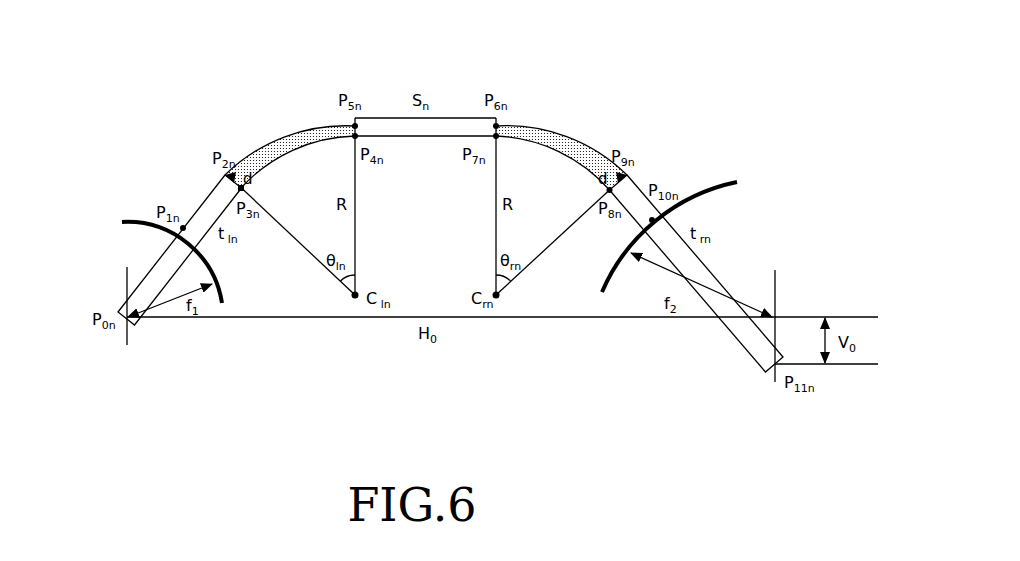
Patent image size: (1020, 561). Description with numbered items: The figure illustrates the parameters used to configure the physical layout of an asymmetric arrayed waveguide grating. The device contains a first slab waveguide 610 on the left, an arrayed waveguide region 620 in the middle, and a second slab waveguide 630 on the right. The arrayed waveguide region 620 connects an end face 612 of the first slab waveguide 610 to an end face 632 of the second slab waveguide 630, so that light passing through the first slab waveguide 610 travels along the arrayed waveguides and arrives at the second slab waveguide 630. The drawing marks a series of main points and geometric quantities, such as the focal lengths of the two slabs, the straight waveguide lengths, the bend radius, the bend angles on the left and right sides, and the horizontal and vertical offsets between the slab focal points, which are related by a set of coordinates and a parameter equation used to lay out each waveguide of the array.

The arrayed waveguide region 620 is at (666, 67).
The first slab waveguide 610 is at (147, 250).
The second slab waveguide 630 is at (718, 273).
The end face of the first slab waveguide 612 is at (143, 220).
The end face of the second slab waveguide 632 is at (709, 183).